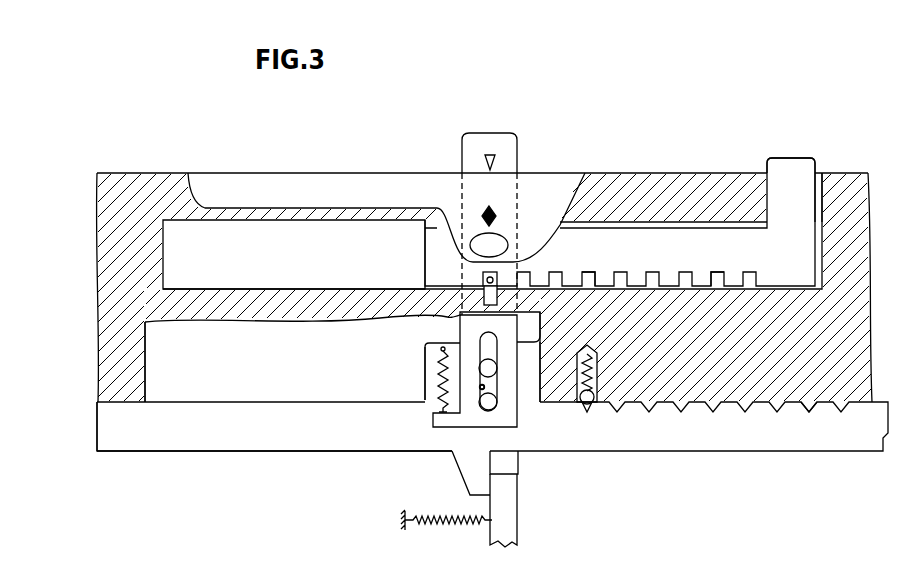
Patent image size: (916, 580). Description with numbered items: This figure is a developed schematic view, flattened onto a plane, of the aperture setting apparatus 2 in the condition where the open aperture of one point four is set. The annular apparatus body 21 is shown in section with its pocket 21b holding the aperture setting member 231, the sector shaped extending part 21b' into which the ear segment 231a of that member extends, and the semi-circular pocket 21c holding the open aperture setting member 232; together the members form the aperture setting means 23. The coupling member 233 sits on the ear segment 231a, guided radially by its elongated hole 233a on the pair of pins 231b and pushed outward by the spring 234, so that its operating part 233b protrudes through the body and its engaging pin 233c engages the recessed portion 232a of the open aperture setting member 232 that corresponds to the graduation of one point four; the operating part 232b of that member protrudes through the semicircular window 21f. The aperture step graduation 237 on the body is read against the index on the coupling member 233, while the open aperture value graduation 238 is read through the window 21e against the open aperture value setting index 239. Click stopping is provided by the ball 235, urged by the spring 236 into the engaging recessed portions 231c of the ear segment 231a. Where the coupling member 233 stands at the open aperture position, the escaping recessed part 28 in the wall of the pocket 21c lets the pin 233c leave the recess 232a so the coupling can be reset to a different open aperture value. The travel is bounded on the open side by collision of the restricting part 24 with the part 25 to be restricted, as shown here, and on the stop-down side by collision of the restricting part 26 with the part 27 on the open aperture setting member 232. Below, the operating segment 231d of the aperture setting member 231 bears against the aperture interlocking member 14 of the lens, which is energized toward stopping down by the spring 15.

The aperture setting apparatus 2 is at (140, 172).
The apparatus body 21 is at (112, 212).
The pocket 21b is at (76, 426).
The sector shaped extending part 21b' is at (100, 362).
The semi-circular pocket 21c is at (276, 265).
The window 21e is at (478, 236).
The semicircular window 21f is at (821, 182).
The aperture setting means 23 is at (272, 461).
The aperture setting range restricting part in the side of open aperture 24 is at (540, 368).
The part to be restricted in the side of open aperture 25 is at (545, 368).
The aperture setting range restricting part in the side of aperture setting 26 is at (165, 256).
The part to be restricted in the side of aperture setting 27 is at (425, 244).
The escaping recessed part 28 is at (480, 302).
The aperture interlocking member 14 is at (512, 513).
The spring 15 is at (457, 523).
The aperture setting member 231 is at (180, 452).
The ear segment 231a is at (424, 382).
The pins 231b is at (519, 455).
The engaging recessed portions 231c is at (718, 410).
The operating segment 231d is at (467, 472).
The open aperture setting member 232 is at (670, 240).
The engaging recessed portions 232a is at (602, 272).
The operating part 232b is at (793, 170).
The coupling member 233 is at (423, 343).
The elongated hole 233a is at (482, 390).
The operating part 233b is at (508, 138).
The engaging pin 233c is at (487, 280).
The spring 234 is at (436, 383).
The ball 235 is at (586, 406).
The spring 236 is at (488, 150).
The aperture step graduation 237 is at (332, 182).
The open aperture value graduation 238 is at (715, 240).
The open aperture value setting index 239 is at (483, 212).